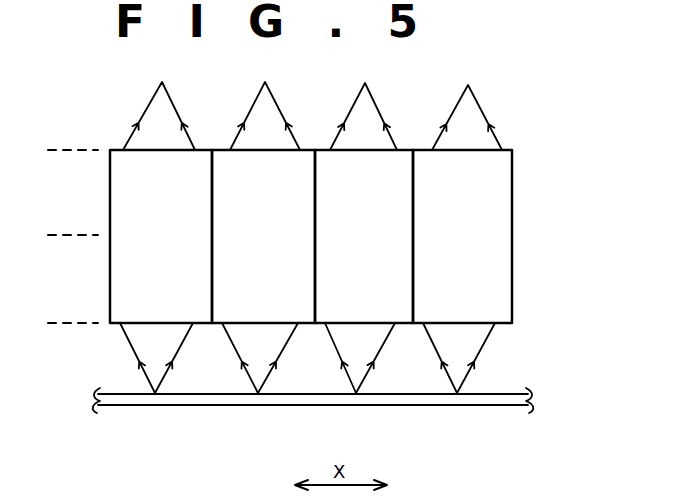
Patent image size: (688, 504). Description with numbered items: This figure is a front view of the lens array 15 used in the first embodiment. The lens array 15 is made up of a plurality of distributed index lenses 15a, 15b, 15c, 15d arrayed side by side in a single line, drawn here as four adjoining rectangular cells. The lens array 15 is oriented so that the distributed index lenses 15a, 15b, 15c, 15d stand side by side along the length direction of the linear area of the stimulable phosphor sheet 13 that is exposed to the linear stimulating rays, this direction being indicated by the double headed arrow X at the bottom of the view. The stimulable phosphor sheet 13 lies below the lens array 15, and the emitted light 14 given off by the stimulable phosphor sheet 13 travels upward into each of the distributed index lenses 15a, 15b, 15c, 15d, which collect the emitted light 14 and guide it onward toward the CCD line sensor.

The stimulable phosphor sheet 13 is at (483, 405).
The emitted light 14 is at (487, 347).
The lens array 15 is at (294, 200).
The distributed index lens 15a is at (498, 163).
The distributed index lens 15b is at (397, 165).
The distributed index lens 15c is at (305, 162).
The distributed index lens 15d is at (207, 160).